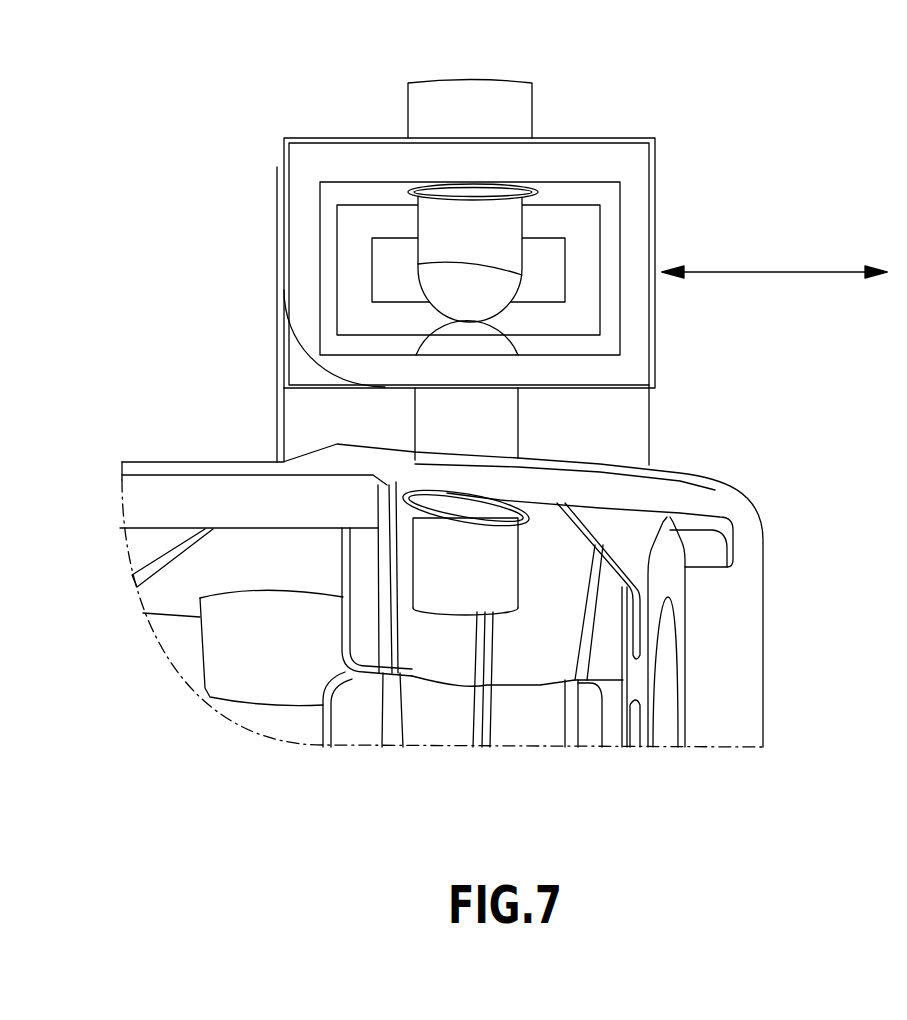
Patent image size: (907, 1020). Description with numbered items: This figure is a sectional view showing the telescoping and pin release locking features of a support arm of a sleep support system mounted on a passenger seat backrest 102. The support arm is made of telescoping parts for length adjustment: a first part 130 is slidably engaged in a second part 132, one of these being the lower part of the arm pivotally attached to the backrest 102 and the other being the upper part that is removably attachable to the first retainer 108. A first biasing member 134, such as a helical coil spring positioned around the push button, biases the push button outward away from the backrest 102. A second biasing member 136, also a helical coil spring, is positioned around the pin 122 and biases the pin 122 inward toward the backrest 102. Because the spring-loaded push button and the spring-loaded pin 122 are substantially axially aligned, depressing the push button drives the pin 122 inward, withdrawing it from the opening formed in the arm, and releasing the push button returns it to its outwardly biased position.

The backrest 102 is at (473, 93).
The first retainer 108 is at (717, 720).
The pin 122 is at (427, 432).
The first part 130 is at (357, 270).
The second part 132 is at (312, 297).
The first biasing member 134 is at (533, 187).
The second biasing member 136 is at (433, 492).